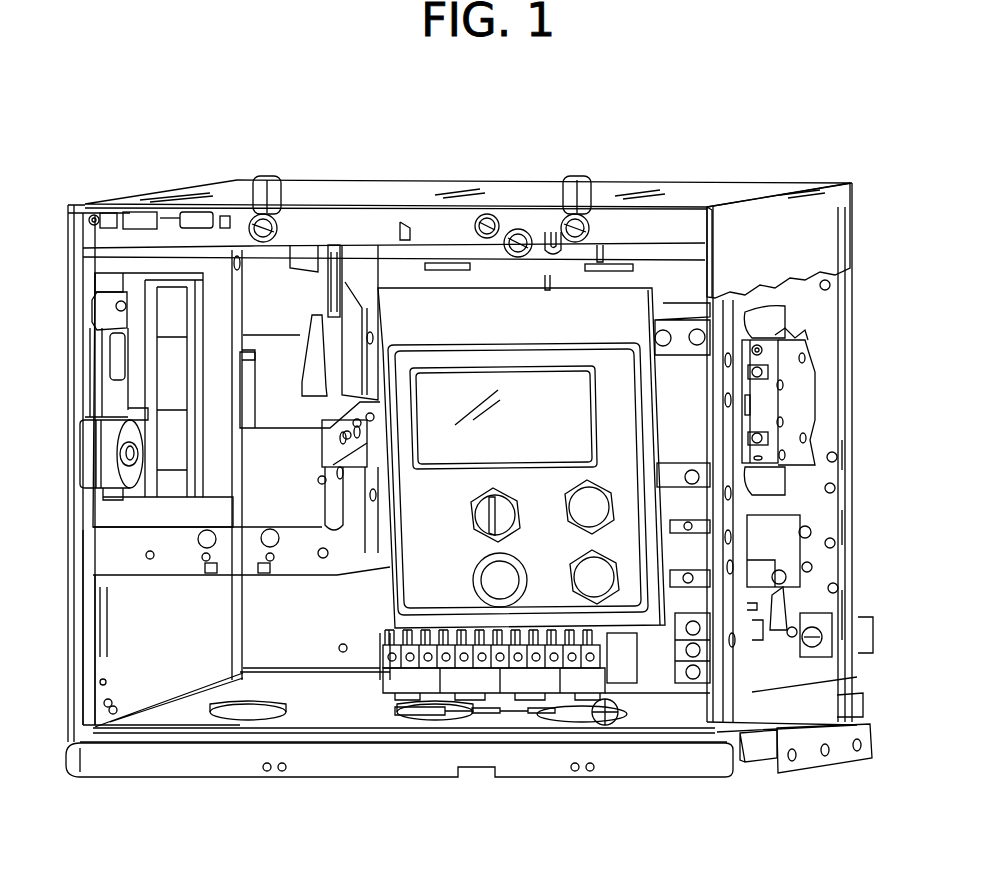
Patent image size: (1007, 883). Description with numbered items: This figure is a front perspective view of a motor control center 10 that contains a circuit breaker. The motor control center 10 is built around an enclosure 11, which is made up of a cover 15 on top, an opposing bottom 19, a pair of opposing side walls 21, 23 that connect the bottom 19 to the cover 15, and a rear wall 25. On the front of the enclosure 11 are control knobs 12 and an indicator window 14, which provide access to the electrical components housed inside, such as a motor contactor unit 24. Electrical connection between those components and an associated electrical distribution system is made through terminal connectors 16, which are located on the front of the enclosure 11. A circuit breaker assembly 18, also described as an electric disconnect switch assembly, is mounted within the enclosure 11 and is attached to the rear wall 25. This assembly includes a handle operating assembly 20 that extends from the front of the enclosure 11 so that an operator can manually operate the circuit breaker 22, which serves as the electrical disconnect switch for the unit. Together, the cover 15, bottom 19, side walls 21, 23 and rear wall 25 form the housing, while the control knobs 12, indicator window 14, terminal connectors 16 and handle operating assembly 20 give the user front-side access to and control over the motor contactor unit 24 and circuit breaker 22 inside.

The motor control center 10 is at (731, 827).
The enclosure 11 is at (150, 745).
The control knobs 12 is at (467, 517).
The indicator window 14 is at (603, 412).
The cover 15 is at (711, 195).
The terminal connectors 16 is at (418, 678).
The circuit breaker assembly 18 is at (86, 306).
The bottom 19 is at (330, 718).
The handle operating assembly 20 is at (78, 468).
The side wall 21 is at (133, 635).
The circuit breaker 22 is at (296, 563).
The side wall 23 is at (833, 217).
The motor contactor unit 24 is at (705, 523).
The rear wall 25 is at (356, 618).